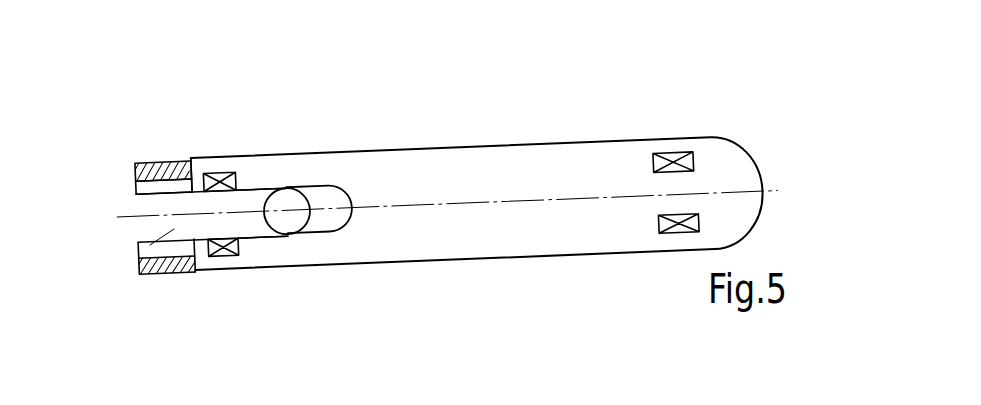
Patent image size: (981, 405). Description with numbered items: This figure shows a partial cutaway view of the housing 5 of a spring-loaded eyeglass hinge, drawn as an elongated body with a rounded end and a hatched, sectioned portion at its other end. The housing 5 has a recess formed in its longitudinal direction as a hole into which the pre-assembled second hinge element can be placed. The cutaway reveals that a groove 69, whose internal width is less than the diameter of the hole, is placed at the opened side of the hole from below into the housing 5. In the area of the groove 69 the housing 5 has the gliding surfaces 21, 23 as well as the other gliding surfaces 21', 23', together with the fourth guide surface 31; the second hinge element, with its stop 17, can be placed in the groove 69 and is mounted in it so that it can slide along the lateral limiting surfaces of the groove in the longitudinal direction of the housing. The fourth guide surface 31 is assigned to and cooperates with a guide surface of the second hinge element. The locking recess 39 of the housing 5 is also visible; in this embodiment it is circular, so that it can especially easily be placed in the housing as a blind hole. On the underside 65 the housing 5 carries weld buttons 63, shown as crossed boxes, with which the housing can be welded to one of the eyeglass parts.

The housing 5 is at (757, 148).
The stop 17 is at (168, 182).
The gliding surface 21 is at (162, 306).
The other gliding surface 21' is at (116, 198).
The gliding surface 23 is at (263, 303).
The other gliding surface 23' is at (272, 108).
The fourth guide surface 31 is at (203, 201).
The locking recess 39 is at (290, 203).
The weld buttons 63 is at (222, 172).
The underside 65 is at (487, 180).
The groove 69 is at (187, 228).